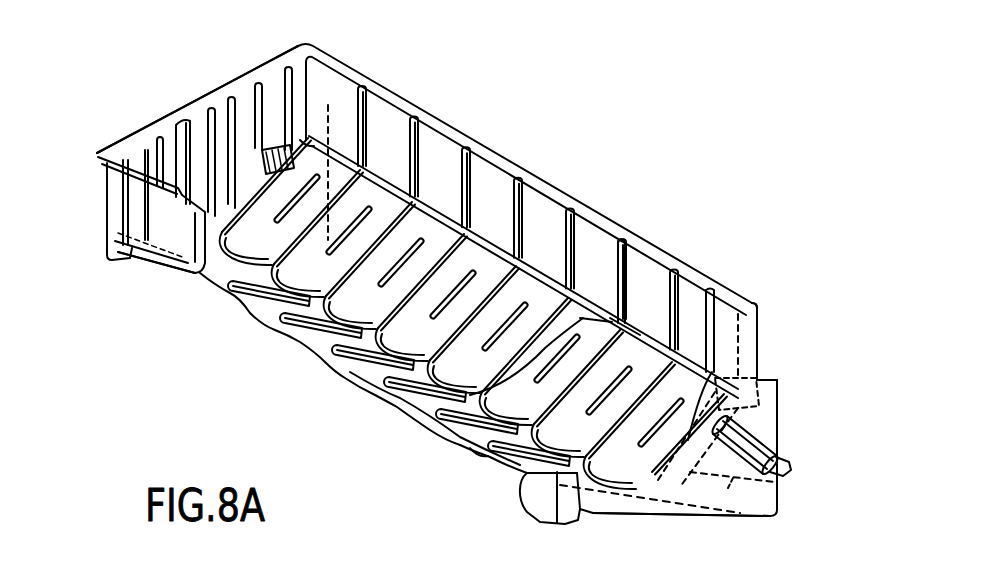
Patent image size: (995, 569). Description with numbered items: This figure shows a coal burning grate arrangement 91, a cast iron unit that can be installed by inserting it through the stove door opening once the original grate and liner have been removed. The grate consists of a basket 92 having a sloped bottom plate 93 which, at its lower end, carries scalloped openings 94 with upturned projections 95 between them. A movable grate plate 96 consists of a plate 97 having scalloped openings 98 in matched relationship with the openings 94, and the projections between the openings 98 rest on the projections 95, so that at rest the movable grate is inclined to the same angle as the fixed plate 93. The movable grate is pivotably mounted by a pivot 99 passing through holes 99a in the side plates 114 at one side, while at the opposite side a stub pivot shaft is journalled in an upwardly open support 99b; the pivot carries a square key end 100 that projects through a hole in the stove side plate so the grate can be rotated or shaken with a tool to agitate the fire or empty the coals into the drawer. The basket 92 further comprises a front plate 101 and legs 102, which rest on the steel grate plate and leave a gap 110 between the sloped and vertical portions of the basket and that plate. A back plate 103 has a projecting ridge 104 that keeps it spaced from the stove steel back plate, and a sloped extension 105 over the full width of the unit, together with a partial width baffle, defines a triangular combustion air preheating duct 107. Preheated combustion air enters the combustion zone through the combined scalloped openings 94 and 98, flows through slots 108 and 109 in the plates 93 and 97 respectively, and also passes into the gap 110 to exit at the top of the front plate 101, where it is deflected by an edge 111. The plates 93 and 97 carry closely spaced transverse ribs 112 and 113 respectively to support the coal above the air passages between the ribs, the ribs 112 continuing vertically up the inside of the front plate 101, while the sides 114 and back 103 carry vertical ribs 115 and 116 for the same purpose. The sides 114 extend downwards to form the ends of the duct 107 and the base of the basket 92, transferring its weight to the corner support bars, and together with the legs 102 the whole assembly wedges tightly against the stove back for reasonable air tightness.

The coal burning grate arrangement 91 is at (205, 401).
The basket 92 is at (157, 270).
The sloped bottom plate 93 is at (310, 353).
The scalloped openings 94 is at (408, 378).
The upturned projections 95 is at (430, 413).
The movable grate plate 96 is at (583, 317).
The plate 97 is at (473, 338).
The scalloped openings 98 is at (450, 440).
The pivot 99 is at (300, 100).
The holes 99a is at (255, 160).
The upwardly open support 99b is at (258, 158).
The square key end 100 is at (792, 459).
The front plate 101 is at (140, 203).
The legs 102 is at (113, 255).
The back plate 103 is at (757, 323).
The projecting ridge 104 is at (777, 380).
The sloped extension 105 is at (775, 482).
The combustion air preheating duct 107 is at (731, 492).
The slots 108 is at (475, 452).
The slots 109 is at (580, 318).
The gap 110 is at (593, 512).
The edge 111 is at (93, 153).
The transverse ribs 112 is at (405, 410).
The transverse ribs 113 is at (612, 318).
The side plates 114 is at (207, 92).
The vertical ribs 115 is at (183, 137).
The vertical ribs 116 is at (614, 253).